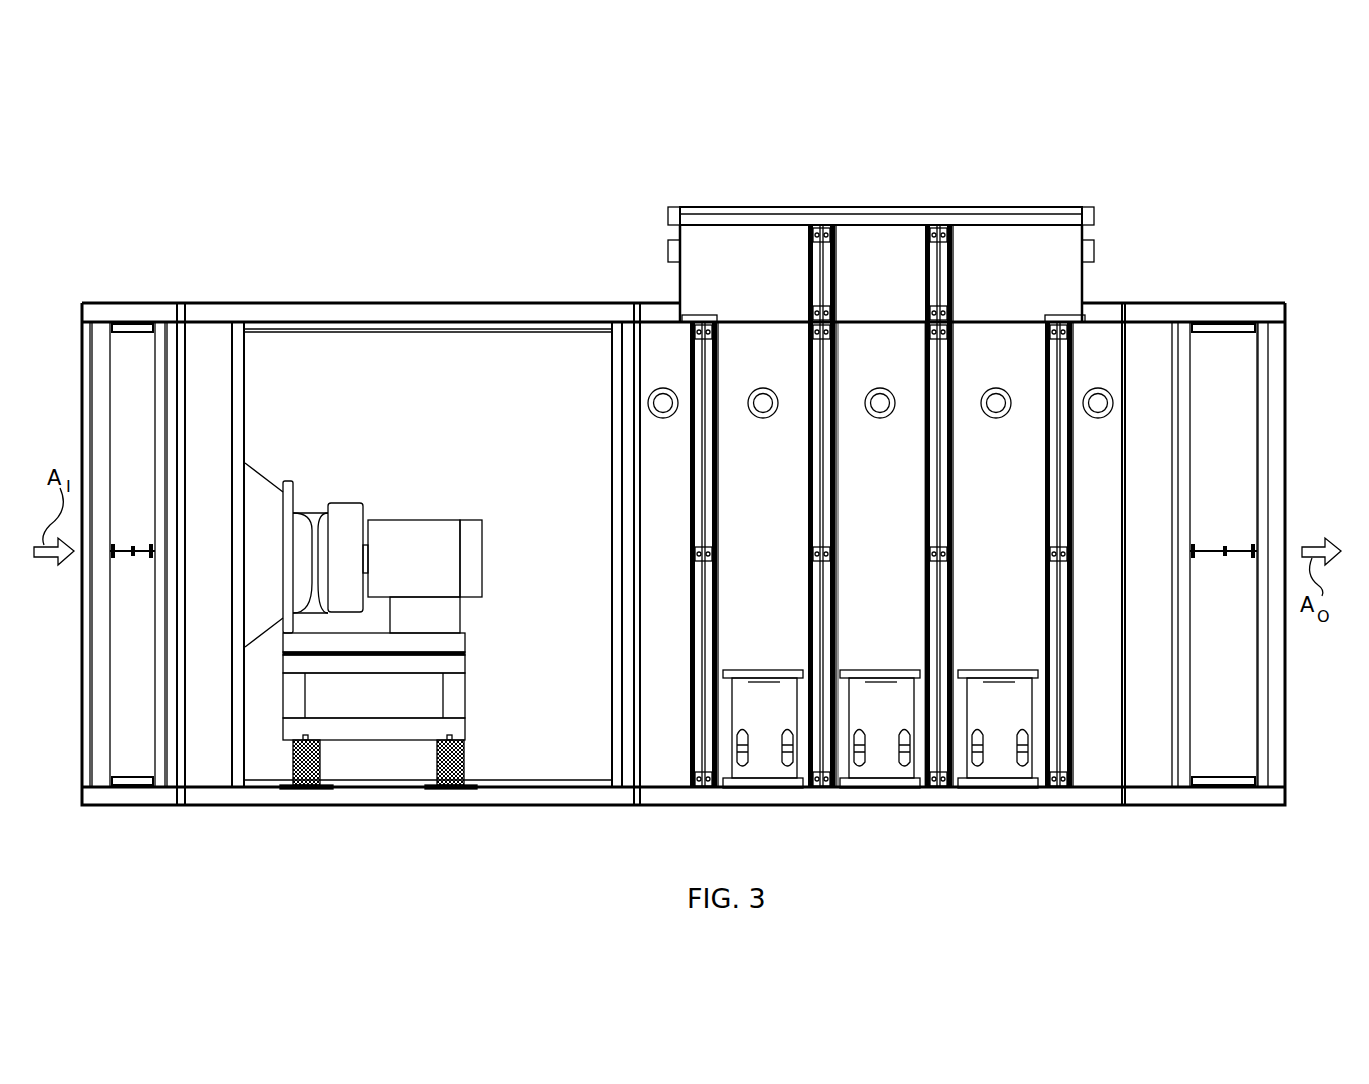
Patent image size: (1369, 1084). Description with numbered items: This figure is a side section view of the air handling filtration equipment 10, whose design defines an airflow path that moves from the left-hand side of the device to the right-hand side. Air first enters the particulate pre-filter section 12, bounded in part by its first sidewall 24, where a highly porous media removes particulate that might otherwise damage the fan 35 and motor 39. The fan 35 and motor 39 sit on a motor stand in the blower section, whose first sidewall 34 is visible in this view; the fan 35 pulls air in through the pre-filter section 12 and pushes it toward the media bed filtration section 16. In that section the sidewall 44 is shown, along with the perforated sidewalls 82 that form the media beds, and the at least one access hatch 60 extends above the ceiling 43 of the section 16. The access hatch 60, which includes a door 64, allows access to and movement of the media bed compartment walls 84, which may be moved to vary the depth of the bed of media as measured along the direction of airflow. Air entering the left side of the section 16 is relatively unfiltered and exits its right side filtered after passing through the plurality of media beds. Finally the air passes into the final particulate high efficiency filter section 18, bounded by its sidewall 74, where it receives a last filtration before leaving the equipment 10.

The air handling filtration system 10 is at (232, 131).
The particulate pre-filter section 12 is at (131, 288).
The media bed filtration section 16 is at (792, 150).
The final particulate high efficiency filter section 18 is at (1199, 268).
The first sidewall 24 is at (143, 436).
The first sidewall 34 is at (475, 416).
The fan 35 is at (311, 484).
The motor 39 is at (426, 498).
The upper ceiling 43 is at (1101, 320).
The sidewall 44 is at (892, 499).
The access hatch 60 is at (1049, 190).
The second door 64 is at (710, 204).
The sidewall 74 is at (1232, 442).
The perforated sidewalls 82 is at (706, 530).
The compartment walls 84 is at (947, 535).